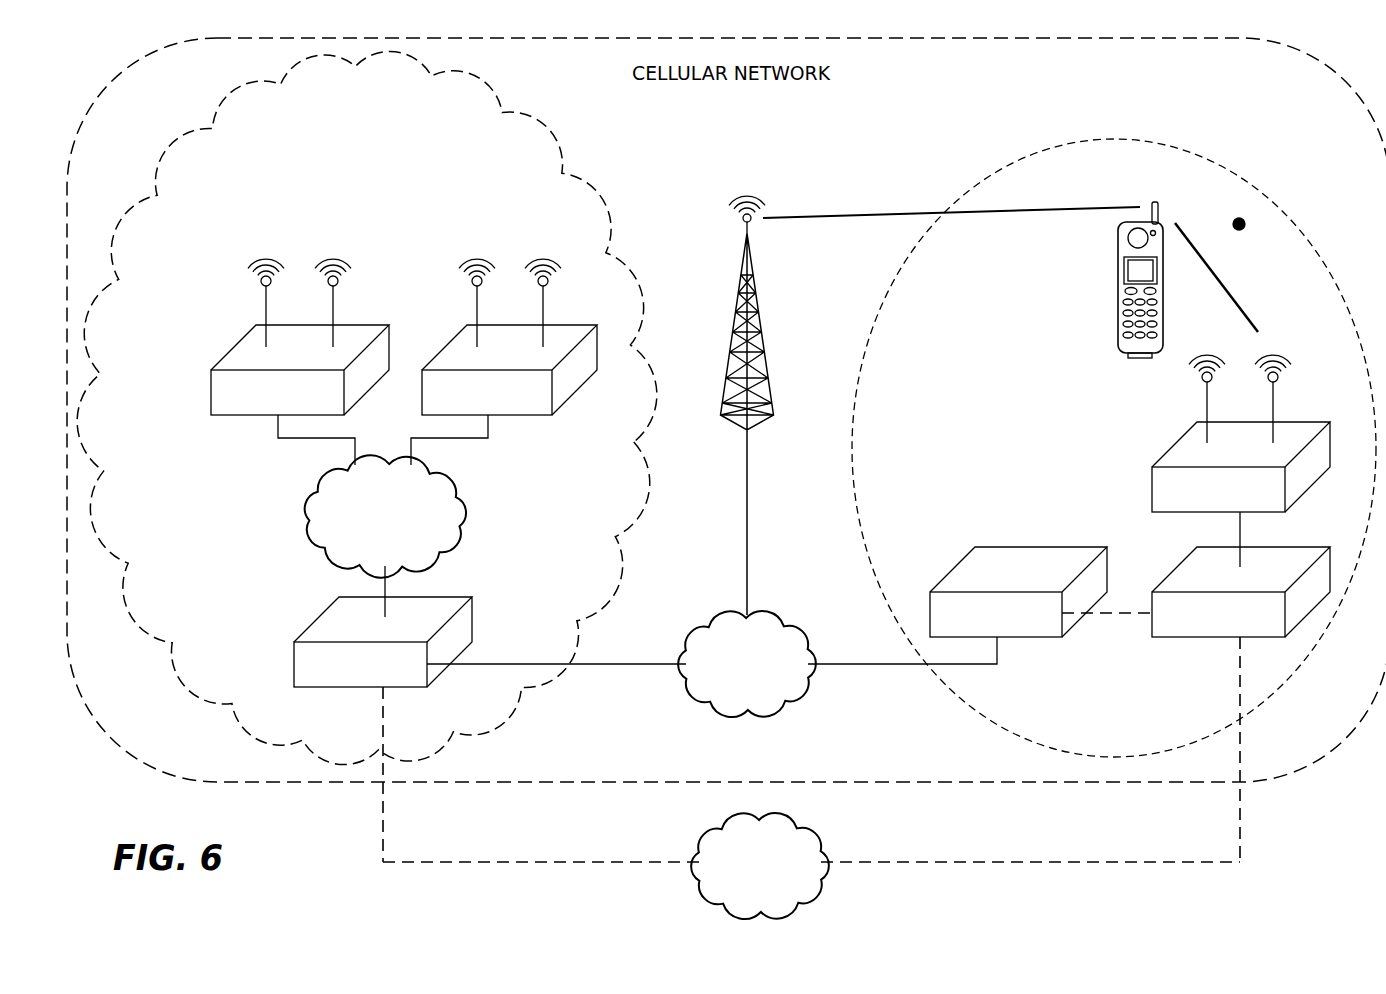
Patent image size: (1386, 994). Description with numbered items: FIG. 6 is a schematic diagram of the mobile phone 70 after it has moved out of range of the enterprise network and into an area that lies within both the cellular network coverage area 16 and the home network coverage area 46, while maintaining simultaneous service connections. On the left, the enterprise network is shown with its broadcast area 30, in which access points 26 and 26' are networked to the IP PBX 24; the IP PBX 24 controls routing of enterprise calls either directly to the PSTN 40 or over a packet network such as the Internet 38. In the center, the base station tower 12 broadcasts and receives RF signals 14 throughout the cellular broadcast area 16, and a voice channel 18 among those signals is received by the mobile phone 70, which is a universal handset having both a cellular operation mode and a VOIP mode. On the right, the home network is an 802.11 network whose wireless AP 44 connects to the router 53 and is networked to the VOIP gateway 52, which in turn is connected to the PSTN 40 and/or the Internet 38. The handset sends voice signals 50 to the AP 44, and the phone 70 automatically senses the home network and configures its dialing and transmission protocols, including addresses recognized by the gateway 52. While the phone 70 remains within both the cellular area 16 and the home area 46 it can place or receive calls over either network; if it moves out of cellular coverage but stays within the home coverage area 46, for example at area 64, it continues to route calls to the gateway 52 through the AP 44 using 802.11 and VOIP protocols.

The base station tower 12 is at (765, 336).
The RF signals 14 is at (740, 193).
The broadcast area 16 is at (283, 782).
The channel 18 is at (865, 215).
The IP PBX 24 is at (294, 665).
The access point 26 is at (504, 366).
The access point 26' is at (300, 366).
The broadcast area 30 is at (205, 127).
The Internet 38 is at (700, 895).
The public system telephone network (PSTN) 40 is at (455, 548).
The AP 44 is at (1152, 490).
The coverage area 46 is at (1243, 184).
The voice signals 50 is at (1225, 290).
The gateway 52 is at (1025, 637).
The router 53 is at (1200, 637).
The area 64 is at (1240, 232).
The mobile phone 70 is at (1135, 357).